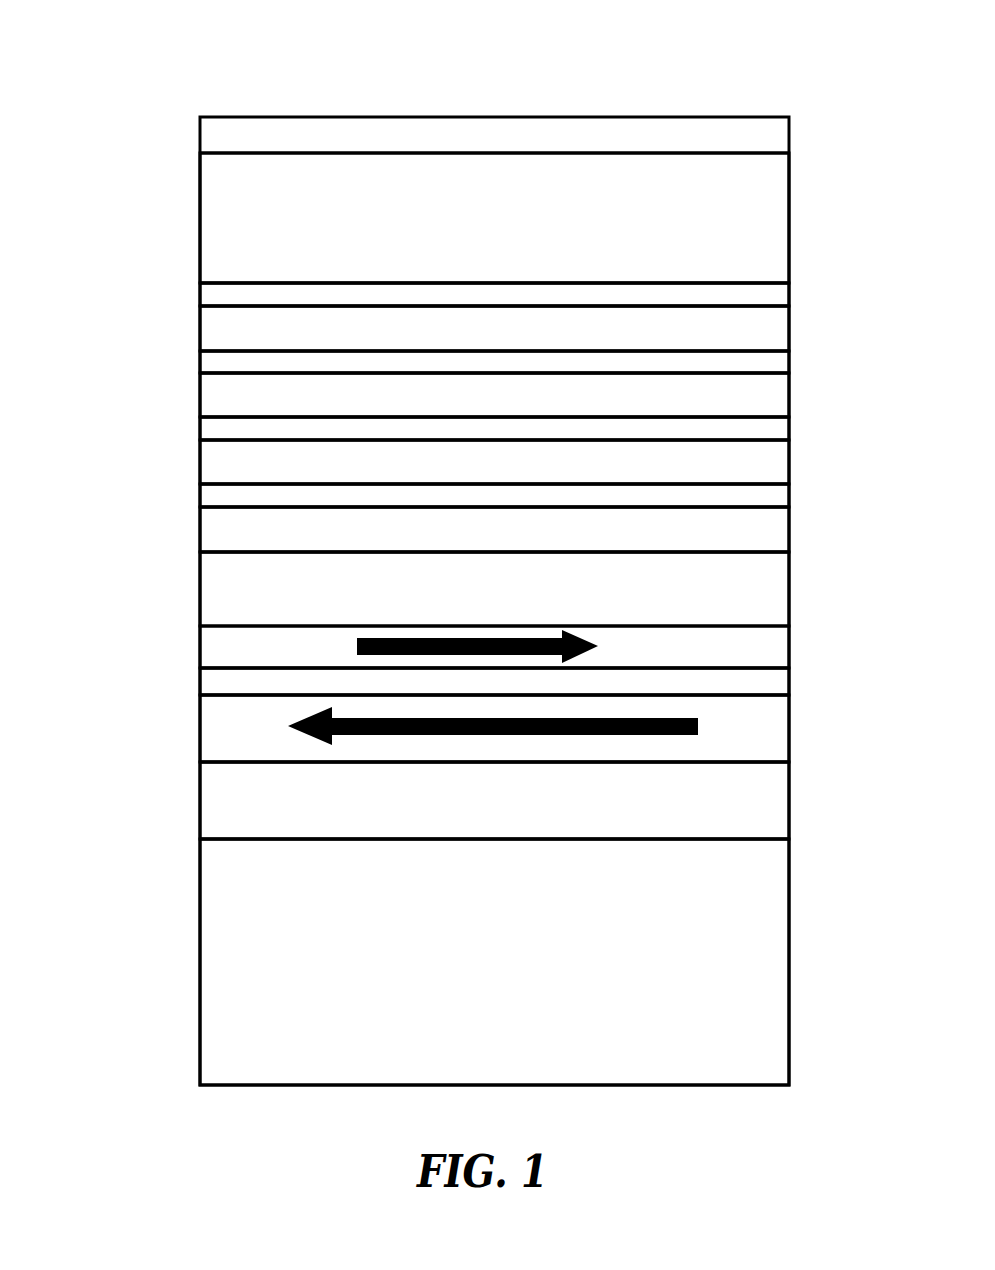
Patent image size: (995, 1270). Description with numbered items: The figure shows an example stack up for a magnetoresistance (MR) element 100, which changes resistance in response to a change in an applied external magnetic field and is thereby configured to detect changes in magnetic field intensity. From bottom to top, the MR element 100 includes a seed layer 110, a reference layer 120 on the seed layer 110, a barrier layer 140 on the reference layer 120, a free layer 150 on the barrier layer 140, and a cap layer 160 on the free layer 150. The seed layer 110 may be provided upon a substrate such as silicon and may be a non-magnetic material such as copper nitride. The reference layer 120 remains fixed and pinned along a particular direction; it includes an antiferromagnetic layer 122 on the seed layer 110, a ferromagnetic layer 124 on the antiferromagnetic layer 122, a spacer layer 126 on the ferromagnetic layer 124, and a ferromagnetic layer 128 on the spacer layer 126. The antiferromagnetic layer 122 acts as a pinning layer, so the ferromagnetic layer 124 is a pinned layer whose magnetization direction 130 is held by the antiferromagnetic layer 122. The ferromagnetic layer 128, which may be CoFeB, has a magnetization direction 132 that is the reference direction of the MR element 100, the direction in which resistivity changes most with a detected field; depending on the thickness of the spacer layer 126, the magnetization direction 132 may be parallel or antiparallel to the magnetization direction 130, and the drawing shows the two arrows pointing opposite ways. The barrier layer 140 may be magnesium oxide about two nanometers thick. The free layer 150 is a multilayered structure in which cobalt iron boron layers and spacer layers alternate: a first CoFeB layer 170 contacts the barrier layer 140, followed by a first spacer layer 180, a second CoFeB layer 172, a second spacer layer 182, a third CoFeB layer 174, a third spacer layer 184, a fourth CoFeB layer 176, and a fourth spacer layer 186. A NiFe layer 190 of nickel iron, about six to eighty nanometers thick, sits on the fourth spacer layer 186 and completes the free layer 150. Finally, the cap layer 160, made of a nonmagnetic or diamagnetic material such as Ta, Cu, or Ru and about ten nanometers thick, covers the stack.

The magnetoresistance (MR) element 100 is at (240, 68).
The seed layer 110 is at (185, 1080).
The reference layer 120 is at (185, 838).
The antiferromagnetic layer 122 is at (765, 800).
The ferromagnetic layer 124 is at (765, 725).
The spacer layer 126 is at (765, 678).
The ferromagnetic layer 128 is at (765, 642).
The magnetization direction 130 is at (318, 718).
The magnetization direction 132 is at (357, 645).
The barrier layer 140 is at (185, 557).
The free layer 150 is at (185, 158).
The cap layer 160 is at (185, 117).
The first CoFeB layer 170 is at (765, 525).
The second CoFeB layer 172 is at (765, 458).
The third CoFeB layer 174 is at (765, 392).
The fourth CoFeB layer 176 is at (765, 325).
The first spacer layer 180 is at (765, 492).
The second spacer layer 182 is at (765, 425).
The third spacer layer 184 is at (765, 358).
The fourth spacer layer 186 is at (765, 291).
The NiFe layer 190 is at (765, 217).